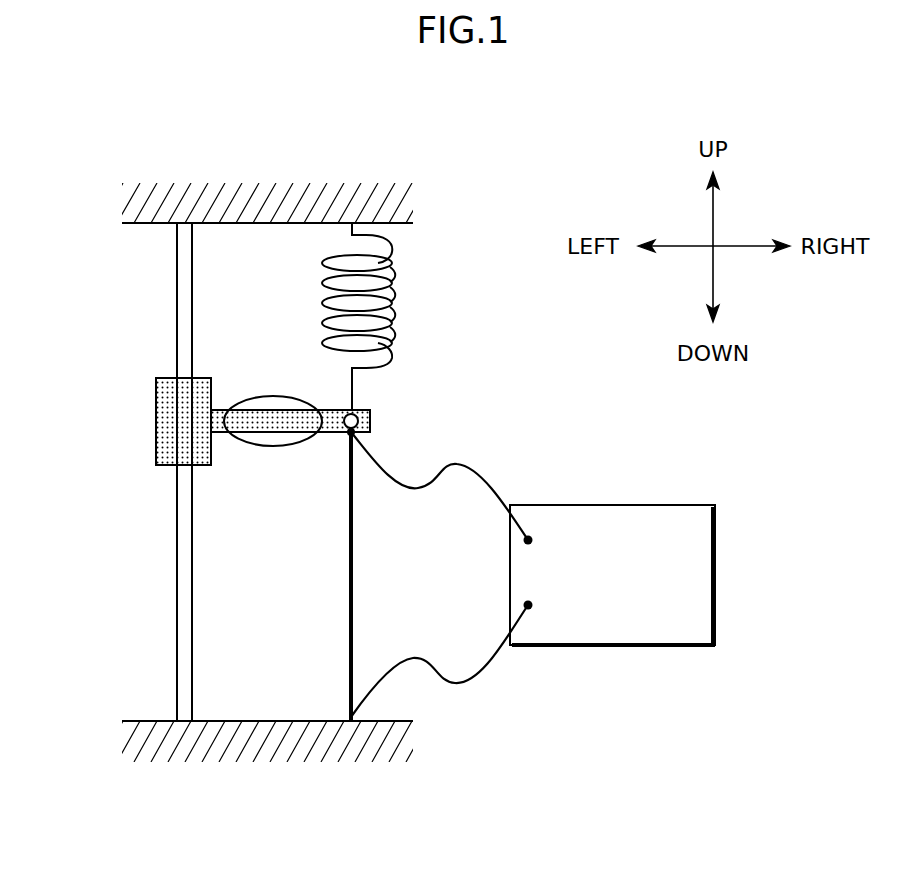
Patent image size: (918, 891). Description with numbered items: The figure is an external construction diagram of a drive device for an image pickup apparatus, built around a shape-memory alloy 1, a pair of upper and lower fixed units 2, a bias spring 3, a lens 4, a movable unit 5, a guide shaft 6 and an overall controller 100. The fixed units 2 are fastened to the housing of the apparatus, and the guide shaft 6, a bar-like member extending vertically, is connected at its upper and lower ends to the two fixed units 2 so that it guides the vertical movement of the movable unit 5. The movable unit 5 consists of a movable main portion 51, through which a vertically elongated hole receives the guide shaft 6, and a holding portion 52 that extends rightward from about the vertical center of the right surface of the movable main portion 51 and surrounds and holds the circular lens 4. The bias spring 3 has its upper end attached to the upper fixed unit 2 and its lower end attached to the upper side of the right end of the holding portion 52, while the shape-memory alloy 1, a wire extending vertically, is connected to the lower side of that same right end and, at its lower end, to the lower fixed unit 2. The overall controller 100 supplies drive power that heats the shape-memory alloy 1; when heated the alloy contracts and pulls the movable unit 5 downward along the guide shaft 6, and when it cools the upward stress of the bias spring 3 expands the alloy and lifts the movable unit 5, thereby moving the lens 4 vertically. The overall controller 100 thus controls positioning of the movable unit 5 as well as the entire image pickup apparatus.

The shape-memory alloy 1 is at (354, 535).
The fixed units 2 is at (130, 198).
The bias spring 3 is at (395, 291).
The lens 4 is at (267, 396).
The movable unit 5 is at (156, 428).
The guide shaft 6 is at (176, 360).
The movable main portion 51 is at (212, 460).
The holding portion 52 is at (333, 410).
The overall controller 100 is at (645, 505).